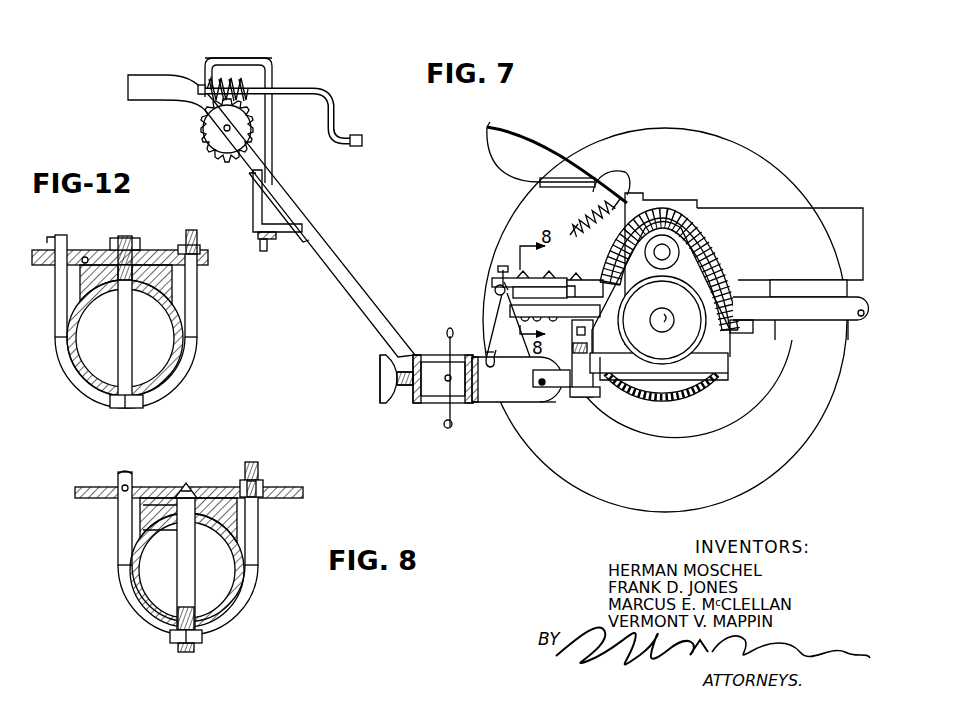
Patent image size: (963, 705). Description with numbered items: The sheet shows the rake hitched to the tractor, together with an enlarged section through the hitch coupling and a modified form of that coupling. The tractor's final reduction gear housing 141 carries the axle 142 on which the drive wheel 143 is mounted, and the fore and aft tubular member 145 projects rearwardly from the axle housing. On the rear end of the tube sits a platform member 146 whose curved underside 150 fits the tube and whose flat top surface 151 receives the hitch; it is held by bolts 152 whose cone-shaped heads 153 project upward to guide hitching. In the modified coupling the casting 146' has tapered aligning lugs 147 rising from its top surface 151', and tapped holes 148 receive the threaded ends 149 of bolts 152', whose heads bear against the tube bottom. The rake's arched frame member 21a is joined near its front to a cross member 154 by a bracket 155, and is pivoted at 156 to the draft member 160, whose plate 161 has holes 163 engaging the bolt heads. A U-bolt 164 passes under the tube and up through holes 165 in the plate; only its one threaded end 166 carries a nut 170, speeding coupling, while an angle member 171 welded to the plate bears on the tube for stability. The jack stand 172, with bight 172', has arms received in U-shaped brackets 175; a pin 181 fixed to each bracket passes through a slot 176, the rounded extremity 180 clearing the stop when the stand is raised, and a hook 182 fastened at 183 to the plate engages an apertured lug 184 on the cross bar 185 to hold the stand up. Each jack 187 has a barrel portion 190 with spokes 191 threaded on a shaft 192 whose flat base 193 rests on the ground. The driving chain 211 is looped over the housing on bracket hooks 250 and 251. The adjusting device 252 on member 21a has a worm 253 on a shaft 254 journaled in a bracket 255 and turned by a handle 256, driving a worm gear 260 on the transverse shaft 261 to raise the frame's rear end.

In FIG. 7, the arched frame member 21a is at (338, 257).
In FIG. 7, the final reduction gear housing 141 is at (667, 377).
In FIG. 7, the axle 142 is at (662, 325).
In FIG. 7, the drive wheel 143 is at (763, 463).
In FIG. 7, the tubular member 145 is at (805, 308).
In FIG. 8, the tubular member 145 is at (240, 590).
In FIG. 7, the platform member 146 is at (470, 278).
In FIG. 8, the platform member 146 is at (224, 520).
In FIG. 12, the casting 146' is at (163, 284).
In FIG. 12, the tapered aligning lug 147 is at (112, 250).
In FIG. 12, the hole 148 is at (137, 237).
In FIG. 12, the threaded end 149 is at (118, 288).
In FIG. 8, the curved underside 150 is at (143, 531).
In FIG. 8, the flat top surface 151 is at (127, 510).
In FIG. 12, the top surface 151' is at (52, 275).
In FIG. 8, the bolt 152 is at (171, 575).
In FIG. 12, the bolt 152' is at (141, 336).
In FIG. 8, the bolt head 153 is at (192, 491).
In FIG. 7, the cross member 154 is at (257, 241).
In FIG. 7, the bracket 155 is at (258, 208).
In FIG. 7, the pivot connection 156 is at (580, 390).
In FIG. 7, the draft member 160 is at (512, 322).
In FIG. 7, the plate 161 is at (503, 270).
In FIG. 8, the plate 161 is at (302, 489).
In FIG. 12, the hole 163 is at (147, 252).
In FIG. 8, the hole 163 is at (175, 488).
In FIG. 7, the U-bolt 164 is at (547, 310).
In FIG. 8, the U-bolt 164 is at (130, 600).
In FIG. 12, the hole 165 is at (57, 236).
In FIG. 8, the hole 165 is at (122, 477).
In FIG. 8, the threaded end 166 is at (257, 462).
In FIG. 7, the nut 170 is at (533, 270).
In FIG. 8, the nut 170 is at (246, 484).
In FIG. 7, the angle member 171 is at (582, 278).
In FIG. 7, the jack stand 172 is at (403, 396).
In FIG. 7, the bight 172' is at (379, 338).
In FIG. 7, the U-shaped bracket 175 is at (538, 367).
In FIG. 7, the slot 176 is at (530, 382).
In FIG. 7, the rounded extremity 180 is at (566, 392).
In FIG. 7, the pin 181 is at (542, 386).
In FIG. 7, the hook 182 is at (500, 310).
In FIG. 7, the fastening point 183 is at (508, 284).
In FIG. 7, the apertured lug 184 is at (483, 355).
In FIG. 7, the cross bar 185 is at (455, 405).
In FIG. 7, the jack 187 is at (375, 378).
In FIG. 7, the barrel portion 190 is at (437, 384).
In FIG. 7, the spoke 191 is at (449, 429).
In FIG. 7, the threaded shaft 192 is at (400, 384).
In FIG. 7, the flat base 193 is at (380, 357).
In FIG. 7, the driving chain 211 is at (716, 248).
In FIG. 7, the bracket hook 250 is at (590, 220).
In FIG. 7, the bracket hook 251 is at (662, 208).
In FIG. 7, the adjusting device 252 is at (284, 75).
In FIG. 7, the worm 253 is at (235, 75).
In FIG. 7, the shaft 254 is at (291, 93).
In FIG. 7, the bracket 255 is at (209, 57).
In FIG. 7, the handle 256 is at (352, 133).
In FIG. 7, the worm gear 260 is at (205, 147).
In FIG. 7, the transverse shaft 261 is at (223, 127).